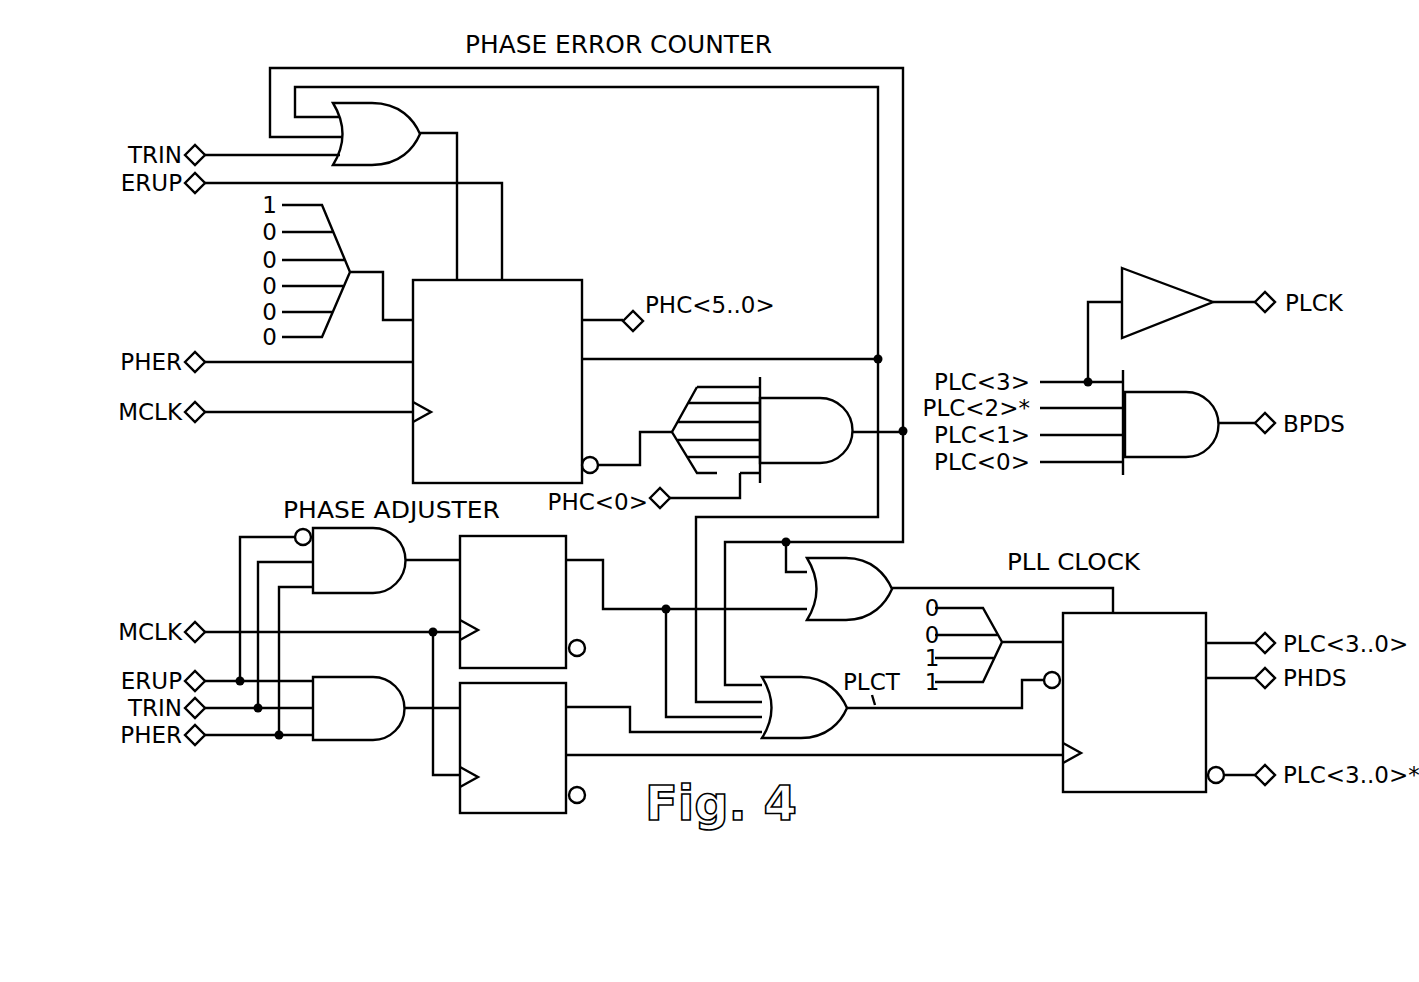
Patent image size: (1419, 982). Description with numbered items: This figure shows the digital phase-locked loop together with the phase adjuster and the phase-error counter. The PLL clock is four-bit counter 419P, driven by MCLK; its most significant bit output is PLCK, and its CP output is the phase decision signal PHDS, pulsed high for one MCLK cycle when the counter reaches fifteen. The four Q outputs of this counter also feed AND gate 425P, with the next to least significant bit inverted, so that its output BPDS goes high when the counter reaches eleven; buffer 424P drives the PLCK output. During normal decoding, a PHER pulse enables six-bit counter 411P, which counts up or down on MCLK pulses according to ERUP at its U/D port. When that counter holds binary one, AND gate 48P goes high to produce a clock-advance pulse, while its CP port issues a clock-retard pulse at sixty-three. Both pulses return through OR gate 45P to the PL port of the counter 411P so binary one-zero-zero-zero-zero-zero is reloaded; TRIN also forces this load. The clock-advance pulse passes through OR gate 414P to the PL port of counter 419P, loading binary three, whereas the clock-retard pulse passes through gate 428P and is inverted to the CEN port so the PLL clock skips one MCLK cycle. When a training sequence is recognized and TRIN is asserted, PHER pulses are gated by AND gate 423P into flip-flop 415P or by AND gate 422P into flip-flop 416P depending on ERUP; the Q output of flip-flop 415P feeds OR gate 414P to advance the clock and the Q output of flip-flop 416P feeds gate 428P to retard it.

The OR gate 45P is at (376, 134).
The six-bit counter 411P is at (505, 381).
The AND gate 48P is at (806, 430).
The buffer / inverter producing PLCK 424P is at (1167, 303).
The AND gate 425P is at (1172, 424).
The AND gate 423P is at (350, 560).
The AND gate 422P is at (359, 708).
The flip-flop 415P is at (522, 602).
The flip-flop 416P is at (522, 748).
The OR gate 414P is at (849, 589).
The OR gate 428P is at (804, 707).
The four-bit counter 419P is at (1134, 702).